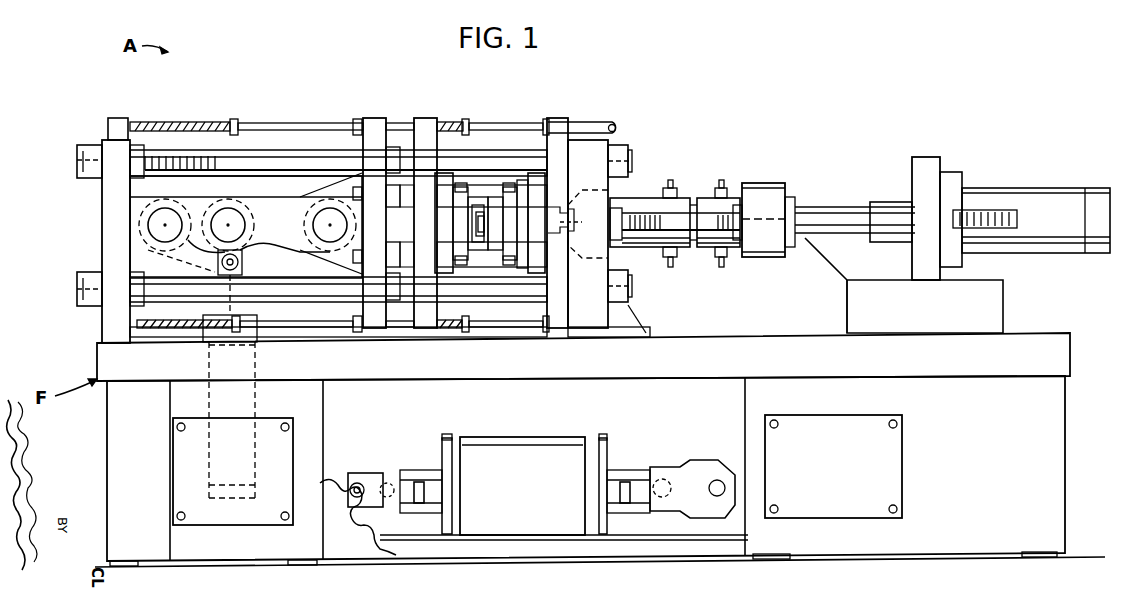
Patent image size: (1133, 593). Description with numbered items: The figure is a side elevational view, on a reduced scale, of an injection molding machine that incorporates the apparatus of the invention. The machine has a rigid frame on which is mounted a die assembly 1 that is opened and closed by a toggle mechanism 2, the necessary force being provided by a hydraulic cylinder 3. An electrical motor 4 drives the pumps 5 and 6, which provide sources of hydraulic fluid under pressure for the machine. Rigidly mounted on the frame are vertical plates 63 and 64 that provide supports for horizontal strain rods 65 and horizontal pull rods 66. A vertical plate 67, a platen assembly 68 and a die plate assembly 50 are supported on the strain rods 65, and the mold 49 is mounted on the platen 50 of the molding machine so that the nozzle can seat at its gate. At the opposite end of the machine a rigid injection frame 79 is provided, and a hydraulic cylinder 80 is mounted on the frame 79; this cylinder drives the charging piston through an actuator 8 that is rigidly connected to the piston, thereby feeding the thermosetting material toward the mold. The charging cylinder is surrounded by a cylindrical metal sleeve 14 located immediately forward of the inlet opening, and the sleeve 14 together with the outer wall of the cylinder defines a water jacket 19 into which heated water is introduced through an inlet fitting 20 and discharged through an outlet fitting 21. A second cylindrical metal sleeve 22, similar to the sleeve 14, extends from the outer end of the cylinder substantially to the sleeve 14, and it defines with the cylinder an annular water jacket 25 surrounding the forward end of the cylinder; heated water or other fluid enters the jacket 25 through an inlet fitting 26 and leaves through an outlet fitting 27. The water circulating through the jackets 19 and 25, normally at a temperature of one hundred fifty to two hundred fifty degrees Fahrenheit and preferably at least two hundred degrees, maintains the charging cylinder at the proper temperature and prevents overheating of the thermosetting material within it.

The die assembly 1 is at (505, 196).
The toggle mechanism 2 is at (283, 195).
The hydraulic cylinder 3 is at (208, 397).
The electrical motor 4 is at (530, 437).
The pump 5 is at (372, 472).
The pump 6 is at (697, 463).
The actuator 8 is at (883, 203).
The cylindrical metal sleeve 14 is at (733, 200).
The water jacket 19 is at (707, 248).
The inlet fitting 20 is at (725, 253).
The outlet fitting 21 is at (724, 198).
The second cylindrical metal sleeve 22 is at (636, 200).
The annular water jacket 25 is at (644, 248).
The inlet fitting 26 is at (675, 250).
The outlet fitting 27 is at (672, 197).
The mold 49 is at (498, 255).
The die plate assembly 50 is at (565, 160).
The vertical plate 63 is at (116, 213).
The vertical plate 64 is at (605, 168).
The horizontal strain rods 65 is at (333, 158).
The horizontal pull rods 66 is at (250, 127).
The vertical plate 67 is at (372, 122).
The platen assembly 68 is at (426, 120).
The rigid injection frame 79 is at (927, 163).
The hydraulic cylinder 80 is at (1035, 195).